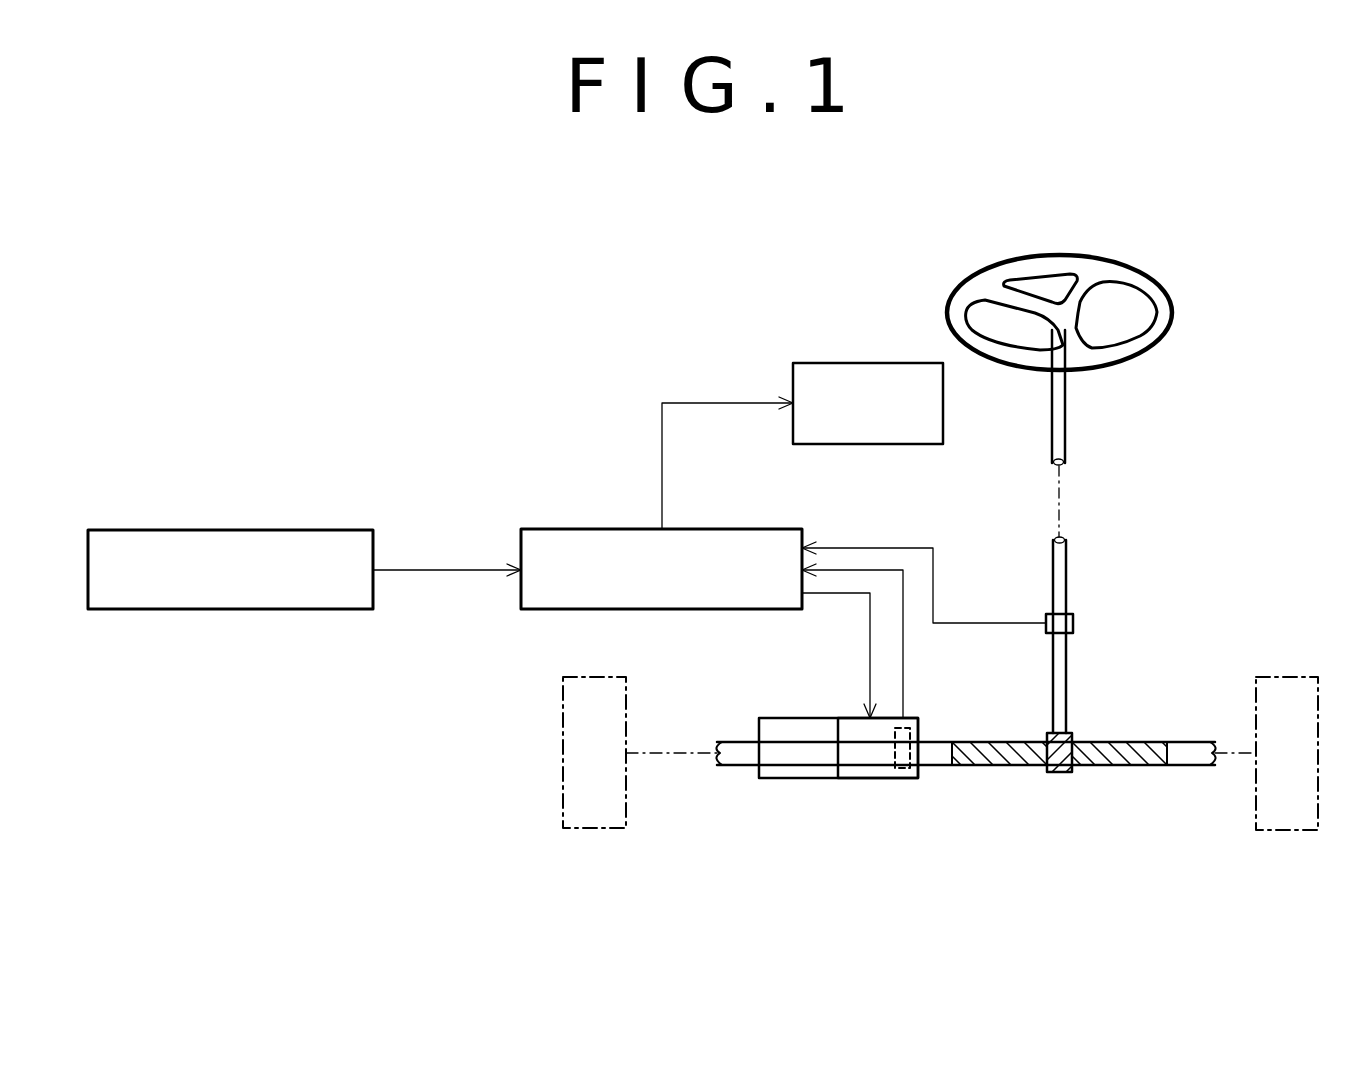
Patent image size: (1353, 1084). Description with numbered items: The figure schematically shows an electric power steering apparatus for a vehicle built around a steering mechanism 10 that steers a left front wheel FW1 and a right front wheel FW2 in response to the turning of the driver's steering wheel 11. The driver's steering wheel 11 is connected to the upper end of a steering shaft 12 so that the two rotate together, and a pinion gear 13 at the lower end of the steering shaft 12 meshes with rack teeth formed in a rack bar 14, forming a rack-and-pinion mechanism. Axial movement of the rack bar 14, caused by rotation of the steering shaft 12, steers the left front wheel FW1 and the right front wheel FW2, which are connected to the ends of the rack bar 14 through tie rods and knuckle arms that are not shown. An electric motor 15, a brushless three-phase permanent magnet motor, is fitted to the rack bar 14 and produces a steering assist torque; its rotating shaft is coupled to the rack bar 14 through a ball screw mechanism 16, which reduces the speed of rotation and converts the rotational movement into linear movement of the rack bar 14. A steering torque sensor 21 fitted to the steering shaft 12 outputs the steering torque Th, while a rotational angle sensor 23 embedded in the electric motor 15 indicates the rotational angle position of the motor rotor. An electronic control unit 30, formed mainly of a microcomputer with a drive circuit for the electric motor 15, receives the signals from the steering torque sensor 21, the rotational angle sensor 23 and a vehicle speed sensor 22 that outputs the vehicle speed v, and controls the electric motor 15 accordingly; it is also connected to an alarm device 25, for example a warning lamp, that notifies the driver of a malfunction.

The steering mechanism 10 is at (1222, 627).
The driver's steering wheel 11 is at (1172, 313).
The steering shaft 12 is at (1067, 410).
The pinion gear 13 is at (1060, 773).
The rack bar 14 is at (1132, 742).
The electric motor 15 is at (855, 718).
The ball screw mechanism 16 is at (795, 718).
The steering torque sensor 21 is at (1073, 623).
The vehicle speed sensor 22 is at (337, 529).
The rotational angle sensor 23 is at (899, 780).
The alarm device 25 is at (880, 363).
The electronic control unit 30 is at (765, 529).
The left front wheel FW1 is at (578, 828).
The right front wheel FW2 is at (1270, 830).